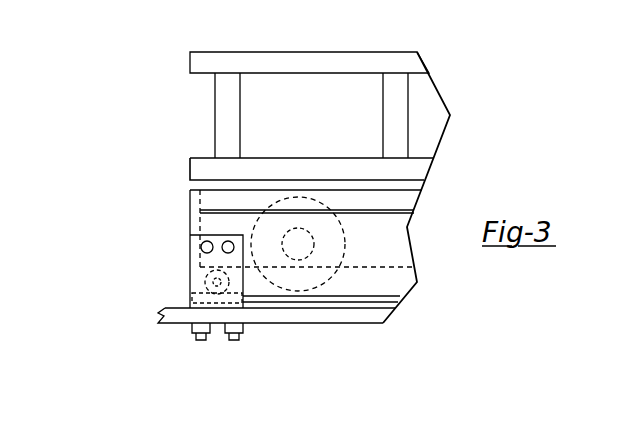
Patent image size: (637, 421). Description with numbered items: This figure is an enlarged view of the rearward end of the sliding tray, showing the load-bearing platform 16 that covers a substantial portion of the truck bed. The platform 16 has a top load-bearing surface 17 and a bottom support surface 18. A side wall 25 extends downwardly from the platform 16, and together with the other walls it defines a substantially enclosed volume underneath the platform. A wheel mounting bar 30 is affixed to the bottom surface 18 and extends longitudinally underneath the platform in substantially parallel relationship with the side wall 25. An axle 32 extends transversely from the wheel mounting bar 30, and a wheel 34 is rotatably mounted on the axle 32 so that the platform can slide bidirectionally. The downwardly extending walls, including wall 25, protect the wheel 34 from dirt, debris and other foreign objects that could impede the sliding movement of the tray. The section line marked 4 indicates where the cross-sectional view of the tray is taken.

The section line 4- 4 is at (330, 27).
The load-bearing platform 16 is at (197, 173).
The top load-bearing surface 17 is at (255, 163).
The bottom support surface 18 is at (403, 177).
The wall 25 is at (190, 237).
The wheel mounting bar 30 is at (382, 252).
The axle 32 is at (298, 252).
The wheel 34 is at (302, 198).